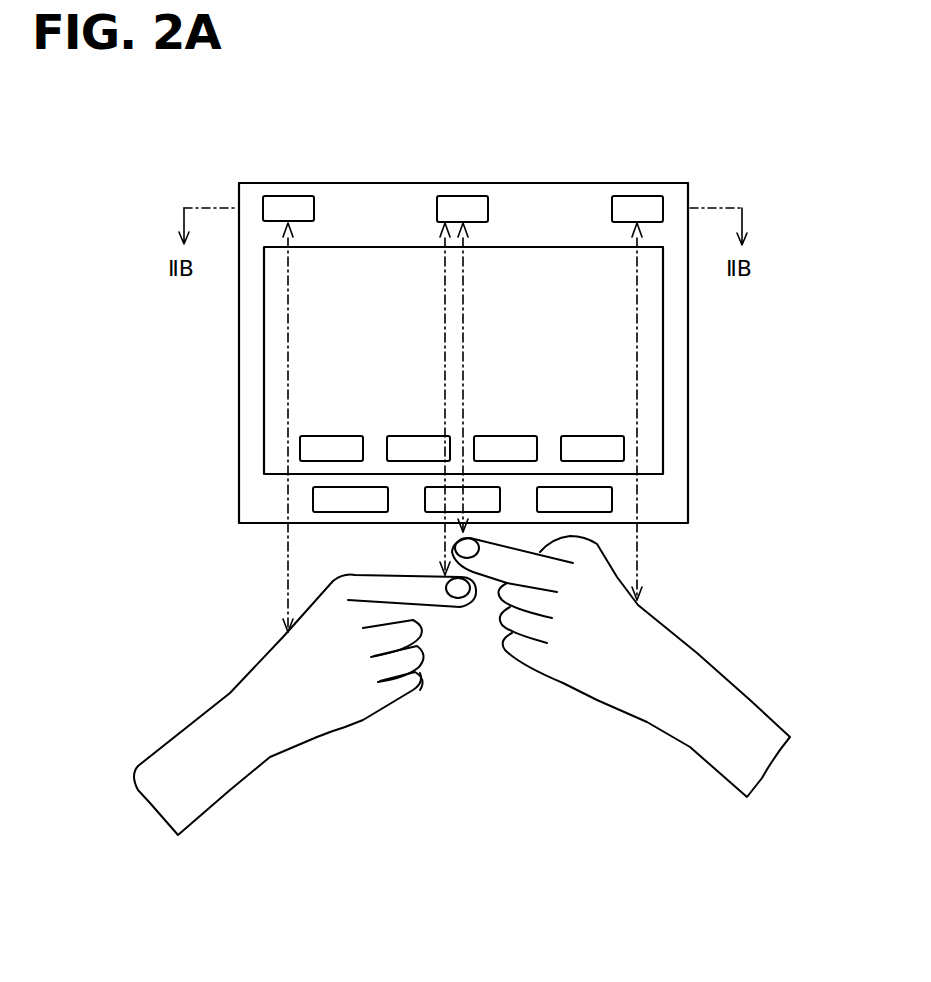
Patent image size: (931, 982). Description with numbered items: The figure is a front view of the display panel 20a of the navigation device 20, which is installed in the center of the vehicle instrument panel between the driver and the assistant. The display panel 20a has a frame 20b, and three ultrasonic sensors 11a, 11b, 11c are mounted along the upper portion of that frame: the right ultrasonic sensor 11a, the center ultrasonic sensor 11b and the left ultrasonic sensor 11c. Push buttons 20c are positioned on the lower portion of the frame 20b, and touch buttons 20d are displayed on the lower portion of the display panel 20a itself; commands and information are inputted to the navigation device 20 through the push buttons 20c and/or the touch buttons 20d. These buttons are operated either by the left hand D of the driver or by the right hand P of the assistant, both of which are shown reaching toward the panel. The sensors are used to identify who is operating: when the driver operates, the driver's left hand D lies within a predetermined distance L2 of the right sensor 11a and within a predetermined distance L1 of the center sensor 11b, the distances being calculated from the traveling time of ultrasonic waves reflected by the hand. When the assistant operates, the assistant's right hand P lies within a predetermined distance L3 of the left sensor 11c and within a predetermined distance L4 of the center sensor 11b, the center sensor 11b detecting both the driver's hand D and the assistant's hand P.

The navigation device 20 is at (737, 130).
The display panel 20a is at (652, 365).
The frame 20b is at (538, 200).
The push buttons 20c is at (325, 498).
The touch buttons 20d is at (315, 447).
The right ultrasonic sensor 11a is at (633, 205).
The center ultrasonic sensor 11b is at (458, 203).
The left ultrasonic sensor 11c is at (286, 203).
The distance from center sensor to object at center portion (driver) L1 is at (479, 377).
The distance from right sensor to object at right portion L2 is at (653, 411).
The distance from left sensor to object at left portion L3 is at (273, 427).
The distance from center sensor to object at center portion (assistant) L4 is at (430, 399).
The right hand of the assistant P is at (330, 717).
The left hand of the driver D is at (585, 677).